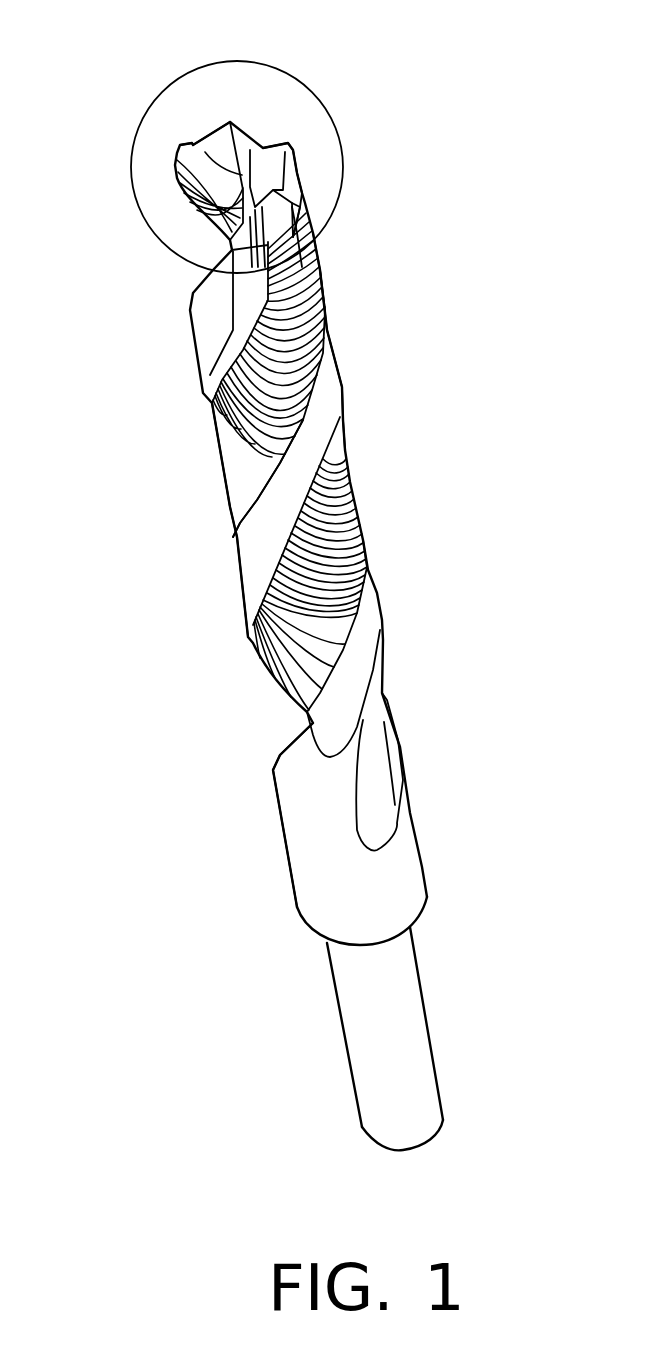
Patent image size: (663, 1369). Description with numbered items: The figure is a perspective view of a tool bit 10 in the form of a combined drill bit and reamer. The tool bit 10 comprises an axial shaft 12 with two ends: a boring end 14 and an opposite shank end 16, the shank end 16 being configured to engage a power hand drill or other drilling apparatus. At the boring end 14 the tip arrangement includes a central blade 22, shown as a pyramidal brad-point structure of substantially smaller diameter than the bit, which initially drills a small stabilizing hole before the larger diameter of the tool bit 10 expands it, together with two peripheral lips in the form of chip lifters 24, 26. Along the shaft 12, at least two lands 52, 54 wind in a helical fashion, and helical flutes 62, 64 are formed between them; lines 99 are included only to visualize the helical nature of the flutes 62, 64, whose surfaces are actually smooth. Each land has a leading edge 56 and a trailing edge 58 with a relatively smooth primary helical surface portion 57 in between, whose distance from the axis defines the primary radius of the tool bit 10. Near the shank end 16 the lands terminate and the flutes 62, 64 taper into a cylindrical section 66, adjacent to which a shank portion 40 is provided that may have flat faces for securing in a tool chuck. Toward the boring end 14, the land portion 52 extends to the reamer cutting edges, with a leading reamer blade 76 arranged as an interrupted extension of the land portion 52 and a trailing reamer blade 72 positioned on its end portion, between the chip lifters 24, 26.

The tool bit 10 is at (397, 493).
The axial shaft 12 is at (390, 897).
The boring end 14 is at (250, 150).
The shank end 16 is at (413, 1100).
The central blade 22 is at (238, 132).
The chip lifter 24 is at (278, 143).
The chip lifter 26 is at (180, 158).
The shank portion 40 is at (365, 1040).
The land portion 52 is at (213, 325).
The land portion 54 is at (247, 550).
The leading edge 56 is at (343, 430).
The primary helical surface portion 57 is at (280, 520).
The trailing edge 58 is at (273, 493).
The helical flute 62 is at (233, 417).
The helical flute 64 is at (275, 657).
The cylindrical section 66 is at (310, 900).
The trailing reamer blade 72 is at (260, 250).
The leading reamer blade 76 is at (303, 207).
The lines 99 is at (307, 353).